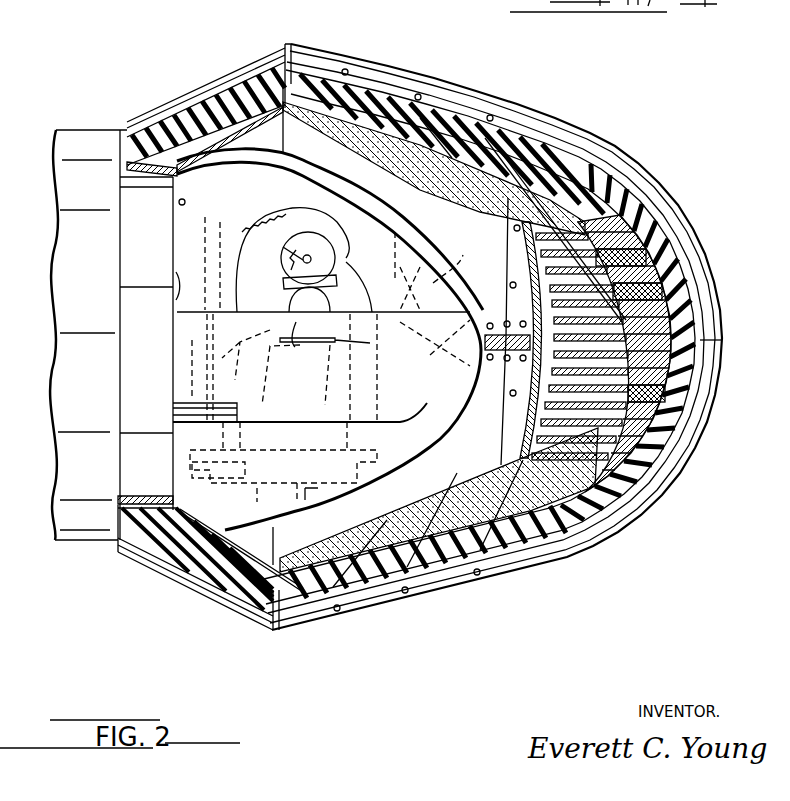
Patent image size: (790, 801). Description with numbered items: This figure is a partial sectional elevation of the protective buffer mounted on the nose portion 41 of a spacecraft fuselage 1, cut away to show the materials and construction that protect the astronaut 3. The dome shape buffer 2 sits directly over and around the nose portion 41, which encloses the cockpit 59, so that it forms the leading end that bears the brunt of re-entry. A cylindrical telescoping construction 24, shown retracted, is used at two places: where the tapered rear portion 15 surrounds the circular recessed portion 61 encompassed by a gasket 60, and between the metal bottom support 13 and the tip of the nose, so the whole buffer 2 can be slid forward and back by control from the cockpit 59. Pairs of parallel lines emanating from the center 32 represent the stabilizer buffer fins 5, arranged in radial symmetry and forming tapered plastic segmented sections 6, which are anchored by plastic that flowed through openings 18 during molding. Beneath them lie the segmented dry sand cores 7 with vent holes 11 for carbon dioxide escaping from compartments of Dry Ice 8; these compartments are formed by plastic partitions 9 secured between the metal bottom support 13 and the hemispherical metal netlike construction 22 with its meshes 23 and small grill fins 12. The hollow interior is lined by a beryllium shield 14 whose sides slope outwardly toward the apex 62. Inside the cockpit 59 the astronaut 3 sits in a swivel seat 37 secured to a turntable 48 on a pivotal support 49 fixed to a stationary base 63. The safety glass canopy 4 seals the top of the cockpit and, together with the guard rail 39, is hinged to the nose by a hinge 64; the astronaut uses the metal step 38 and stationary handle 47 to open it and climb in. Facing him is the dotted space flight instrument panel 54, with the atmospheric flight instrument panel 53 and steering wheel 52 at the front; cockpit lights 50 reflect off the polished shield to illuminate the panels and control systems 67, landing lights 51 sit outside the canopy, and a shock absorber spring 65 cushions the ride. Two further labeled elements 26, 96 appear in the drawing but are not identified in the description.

The spacecraft fuselage 1 is at (93, 115).
The dome shape buffer 2 is at (588, 119).
The astronaut 3 is at (320, 232).
The safety glass canopy 4 is at (323, 243).
The stabilizer buffer fins 5 is at (570, 540).
The plastic segmented sections 6 is at (200, 558).
The dry sand cores 7 is at (392, 516).
The Dry Ice 8 is at (545, 407).
The plastic partitions 9 is at (545, 309).
The vent holes 11 is at (512, 537).
The grill fins 12 is at (645, 285).
The metal bottom support 13 is at (533, 440).
The beryllium shield 14 is at (303, 132).
The tapered rear portion 15 is at (167, 109).
The openings 18 is at (687, 372).
The metal netlike construction 22 is at (552, 369).
The meshes 23 is at (516, 277).
The cylindrical telescoping construction 24 is at (541, 361).
The bulkhead 26 is at (540, 240).
The center 32 is at (723, 348).
The swivel seat 37 is at (344, 290).
The metal step 38 is at (173, 405).
The guard rail 39 is at (405, 226).
The nose portion 41 is at (429, 359).
The stationary handle 47 is at (333, 341).
The turntable 48 is at (363, 452).
The pivotal support 49 is at (257, 498).
The cockpit lights 50 is at (178, 204).
The landing lights 51 is at (177, 292).
The steering wheel 52 is at (426, 271).
The atmospheric flight instrument panel 53 is at (530, 262).
The space flight instrument panel 54 is at (291, 311).
The cockpit 59 is at (275, 276).
The gasket 60 is at (133, 500).
The circular recessed portion 61 is at (143, 354).
The apex 62 is at (286, 661).
The stationary base 63 is at (316, 495).
The hinge 64 is at (450, 338).
The shock absorber spring 65 is at (489, 327).
The control systems 67 is at (184, 370).
The floor space 96 is at (299, 545).